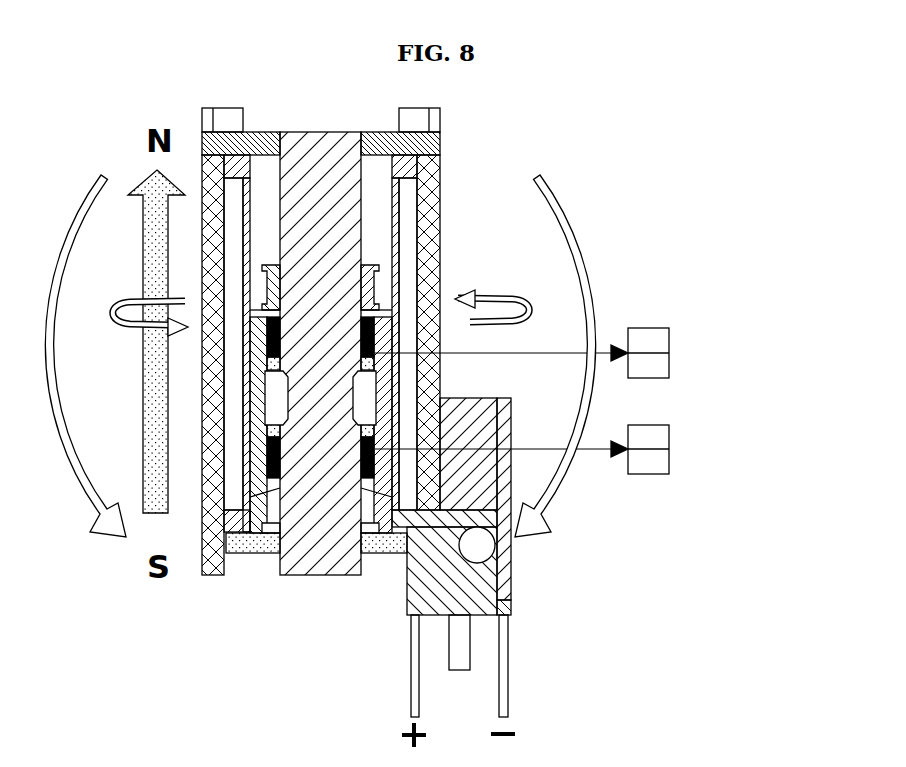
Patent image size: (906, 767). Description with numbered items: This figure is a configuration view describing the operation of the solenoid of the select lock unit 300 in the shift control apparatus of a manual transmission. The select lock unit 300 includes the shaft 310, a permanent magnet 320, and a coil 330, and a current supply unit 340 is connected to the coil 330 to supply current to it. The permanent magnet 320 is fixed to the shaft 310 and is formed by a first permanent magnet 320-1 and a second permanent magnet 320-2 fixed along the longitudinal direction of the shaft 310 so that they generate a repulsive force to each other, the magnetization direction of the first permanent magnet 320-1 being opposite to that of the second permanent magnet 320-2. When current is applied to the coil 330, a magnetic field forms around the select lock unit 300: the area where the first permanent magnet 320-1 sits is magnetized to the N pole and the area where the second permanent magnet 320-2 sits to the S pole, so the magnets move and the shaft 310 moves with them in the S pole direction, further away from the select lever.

The select lock unit 300 is at (440, 138).
The shaft 310 is at (320, 207).
The permanent magnet 320 is at (599, 401).
The first permanent magnet 320-1 is at (669, 343).
The second permanent magnet 320-2 is at (669, 445).
The coil 330 is at (410, 270).
The current supply unit 340 is at (500, 588).